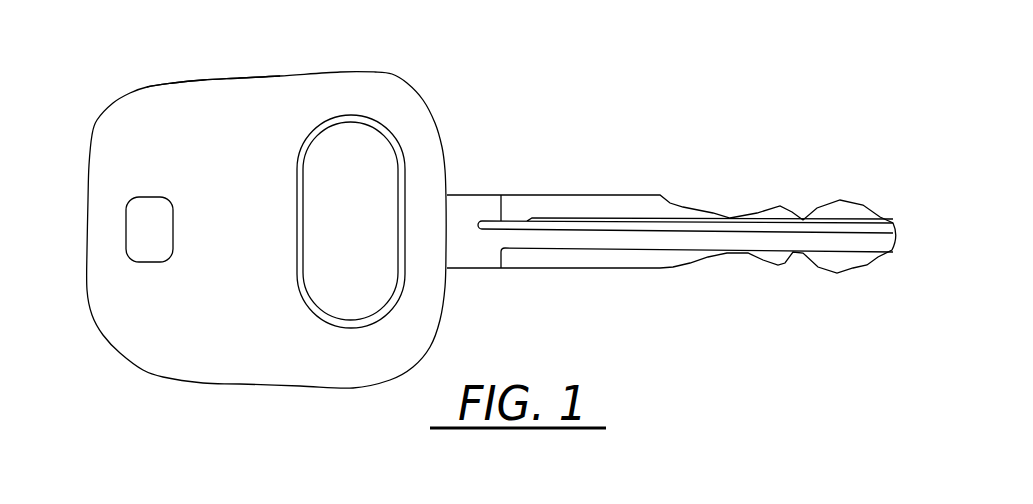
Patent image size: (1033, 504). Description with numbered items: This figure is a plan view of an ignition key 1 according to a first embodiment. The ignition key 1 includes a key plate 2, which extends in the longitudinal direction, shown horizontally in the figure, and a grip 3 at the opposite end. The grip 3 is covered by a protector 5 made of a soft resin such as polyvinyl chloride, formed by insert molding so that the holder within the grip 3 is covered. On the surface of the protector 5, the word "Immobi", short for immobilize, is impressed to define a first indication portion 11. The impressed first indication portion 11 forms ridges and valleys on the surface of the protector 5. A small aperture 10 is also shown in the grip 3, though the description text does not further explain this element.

The ignition key 1 is at (535, 95).
The key plate 2 is at (488, 193).
The grip 3 is at (340, 50).
The protector 5 is at (203, 81).
The key ring hole 10 is at (128, 229).
The first indication portion 11 is at (285, 222).